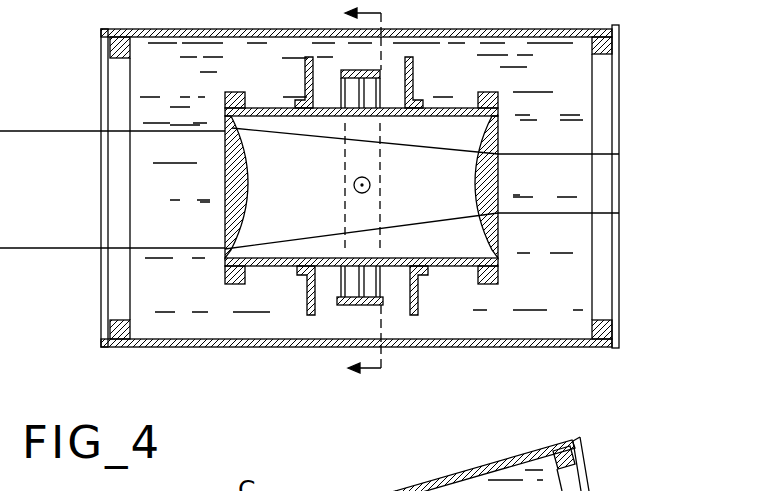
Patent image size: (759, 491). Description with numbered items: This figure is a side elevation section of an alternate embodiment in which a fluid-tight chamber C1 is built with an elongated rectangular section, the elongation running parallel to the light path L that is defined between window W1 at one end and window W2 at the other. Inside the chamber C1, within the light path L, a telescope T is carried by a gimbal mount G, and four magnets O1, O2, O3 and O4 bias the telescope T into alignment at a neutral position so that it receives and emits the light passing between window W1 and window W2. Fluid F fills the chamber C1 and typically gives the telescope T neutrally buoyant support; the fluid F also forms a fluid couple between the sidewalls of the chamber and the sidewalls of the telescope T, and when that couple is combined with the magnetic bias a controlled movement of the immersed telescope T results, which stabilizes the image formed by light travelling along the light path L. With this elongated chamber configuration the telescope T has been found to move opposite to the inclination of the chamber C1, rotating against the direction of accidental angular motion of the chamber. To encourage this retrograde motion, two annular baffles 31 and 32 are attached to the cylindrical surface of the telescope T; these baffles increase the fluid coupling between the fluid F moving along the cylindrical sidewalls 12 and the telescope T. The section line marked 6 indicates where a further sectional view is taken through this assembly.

The cylindrical sidewalls 12 is at (404, 18).
The annular baffle 31 is at (414, 58).
The annular baffle 32 is at (306, 57).
The section line 6- 6 is at (351, 198).
The chamber C1 is at (617, 29).
The magnet O1 is at (129, 50).
The magnet O2 is at (244, 97).
The magnet O3 is at (490, 92).
The magnet O4 is at (590, 44).
The window W1 is at (110, 182).
The window W2 is at (612, 261).
The light path L is at (69, 249).
The fluid F is at (175, 300).
The gimbal mount G is at (342, 306).
The telescope T is at (434, 268).